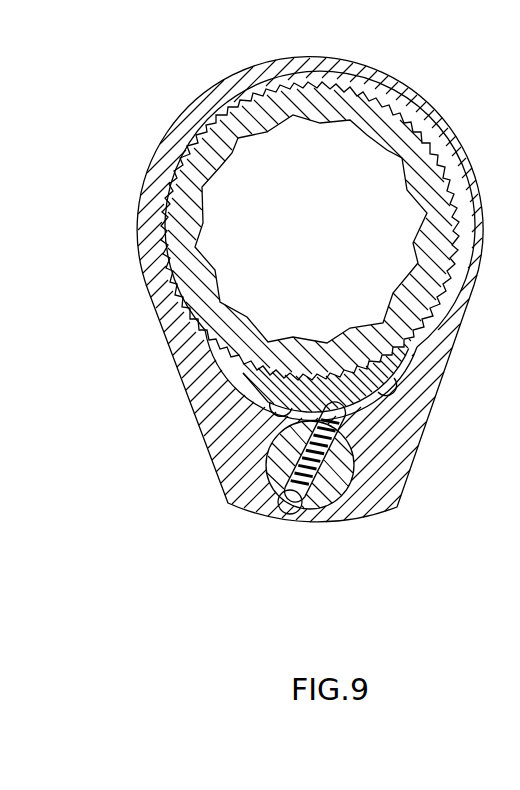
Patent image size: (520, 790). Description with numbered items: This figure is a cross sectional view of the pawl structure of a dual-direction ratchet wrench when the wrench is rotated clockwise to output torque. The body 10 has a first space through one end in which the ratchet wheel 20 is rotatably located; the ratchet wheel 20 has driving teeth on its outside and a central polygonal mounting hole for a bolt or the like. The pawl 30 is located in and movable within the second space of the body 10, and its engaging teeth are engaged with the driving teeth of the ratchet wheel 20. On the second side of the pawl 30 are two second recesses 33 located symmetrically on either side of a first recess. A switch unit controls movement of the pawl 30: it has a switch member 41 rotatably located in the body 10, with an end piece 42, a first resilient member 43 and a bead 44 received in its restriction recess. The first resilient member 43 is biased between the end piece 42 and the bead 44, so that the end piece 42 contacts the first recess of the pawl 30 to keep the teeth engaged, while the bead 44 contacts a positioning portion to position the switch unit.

The body 10 is at (228, 92).
The ratchet wheel 20 is at (198, 158).
The pawl 30 is at (388, 372).
The second recess 33 is at (380, 392).
The switch member 41 is at (323, 492).
The end piece 42 is at (353, 462).
The first resilient member 43 is at (293, 467).
The bead 44 is at (287, 503).